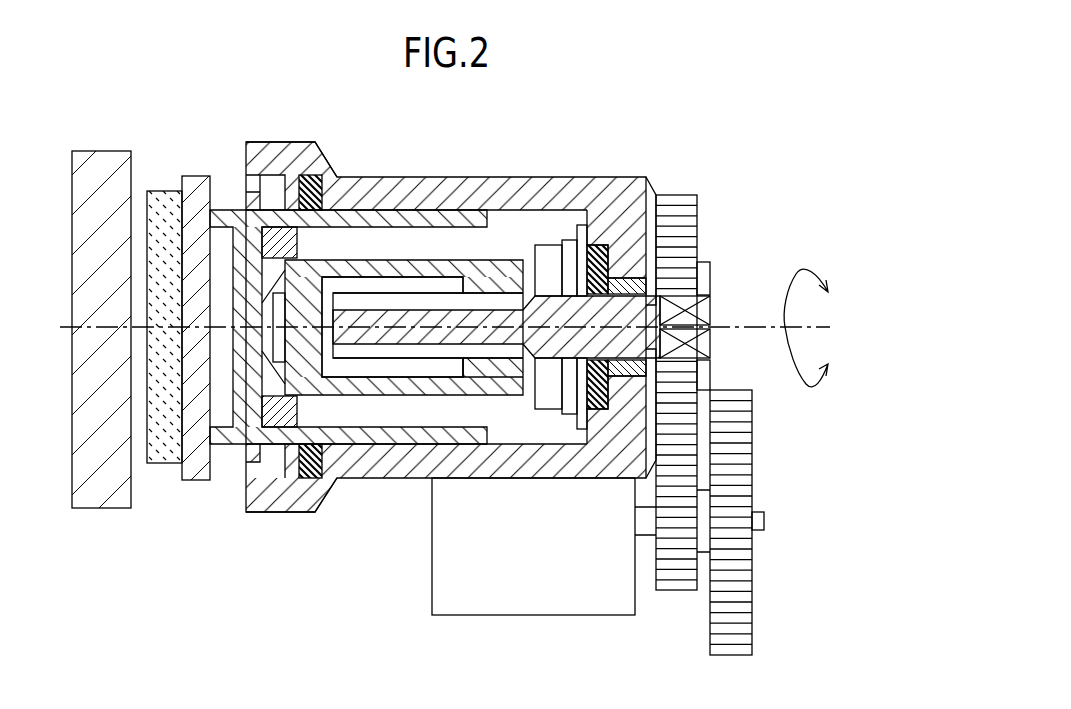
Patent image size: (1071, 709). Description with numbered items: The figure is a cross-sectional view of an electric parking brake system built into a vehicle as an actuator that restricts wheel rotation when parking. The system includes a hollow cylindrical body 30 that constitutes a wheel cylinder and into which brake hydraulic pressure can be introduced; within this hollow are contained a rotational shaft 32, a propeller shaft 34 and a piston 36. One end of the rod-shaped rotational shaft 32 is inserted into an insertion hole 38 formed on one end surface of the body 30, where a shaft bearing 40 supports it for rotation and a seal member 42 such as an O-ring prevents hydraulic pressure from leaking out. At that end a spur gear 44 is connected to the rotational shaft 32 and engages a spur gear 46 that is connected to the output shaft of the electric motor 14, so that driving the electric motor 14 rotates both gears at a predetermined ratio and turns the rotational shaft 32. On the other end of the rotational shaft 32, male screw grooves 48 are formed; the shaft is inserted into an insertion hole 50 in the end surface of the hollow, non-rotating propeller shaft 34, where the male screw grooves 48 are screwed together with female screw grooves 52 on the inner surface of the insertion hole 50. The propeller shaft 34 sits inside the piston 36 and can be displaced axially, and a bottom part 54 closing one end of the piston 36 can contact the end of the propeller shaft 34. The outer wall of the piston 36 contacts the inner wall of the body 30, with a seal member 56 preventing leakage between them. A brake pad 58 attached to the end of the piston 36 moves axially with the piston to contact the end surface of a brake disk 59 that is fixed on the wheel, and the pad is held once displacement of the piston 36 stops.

The electric motor 14 is at (493, 598).
The body 30 is at (497, 196).
The rotational shaft 32 is at (532, 300).
The propeller shaft 34 is at (437, 270).
The piston 36 is at (363, 217).
The insertion hole 38 is at (636, 371).
The shaft bearing 40 is at (597, 245).
The seal member 42 is at (628, 280).
The spur gear 44 is at (680, 200).
The spur gear 46 is at (680, 582).
The male screw grooves 48 is at (370, 352).
The insertion hole 50 is at (478, 356).
The female screw grooves 52 is at (483, 368).
The bottom part 54 is at (233, 258).
The seal member 56 is at (306, 176).
The brake pad 58 is at (161, 193).
The brake disk 59 is at (104, 162).